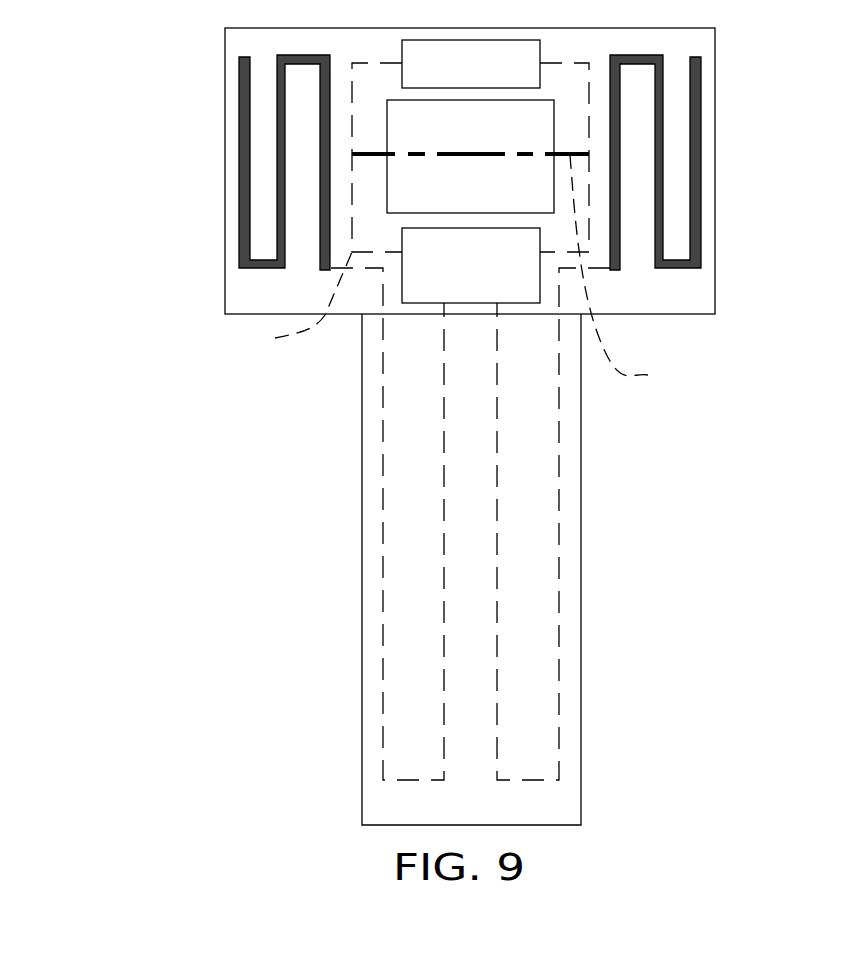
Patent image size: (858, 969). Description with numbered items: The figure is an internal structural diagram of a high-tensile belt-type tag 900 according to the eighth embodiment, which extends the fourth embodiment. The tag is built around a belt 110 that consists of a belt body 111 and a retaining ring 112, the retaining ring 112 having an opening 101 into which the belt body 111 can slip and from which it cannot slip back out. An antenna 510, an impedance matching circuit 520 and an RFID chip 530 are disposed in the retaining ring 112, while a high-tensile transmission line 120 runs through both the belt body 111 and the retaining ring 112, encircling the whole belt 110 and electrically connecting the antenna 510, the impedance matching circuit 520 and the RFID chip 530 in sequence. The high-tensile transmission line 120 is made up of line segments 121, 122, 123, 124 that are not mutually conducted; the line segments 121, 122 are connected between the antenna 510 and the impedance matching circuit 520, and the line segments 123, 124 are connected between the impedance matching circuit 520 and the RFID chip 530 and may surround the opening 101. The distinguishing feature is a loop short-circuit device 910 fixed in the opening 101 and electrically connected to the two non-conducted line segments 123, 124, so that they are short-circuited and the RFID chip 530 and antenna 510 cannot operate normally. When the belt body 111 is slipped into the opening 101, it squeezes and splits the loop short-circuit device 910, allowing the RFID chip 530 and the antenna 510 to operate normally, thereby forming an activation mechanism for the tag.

The high-tensile belt-type tag 900 is at (752, 824).
The belt 110 is at (793, 277).
The belt body 111 is at (580, 430).
The retaining ring 112 is at (715, 262).
The high-tensile transmission line 120 is at (852, 78).
The line segment 121 is at (382, 523).
The line segment 122 is at (559, 523).
The line segment 123 is at (295, 301).
The line segment 124 is at (519, 229).
The antenna 510 is at (239, 163).
The impedance matching circuit 520 is at (517, 303).
The RFID chip 530 is at (541, 50).
The loop short-circuit device 910 is at (589, 253).
The opening 101 is at (413, 198).